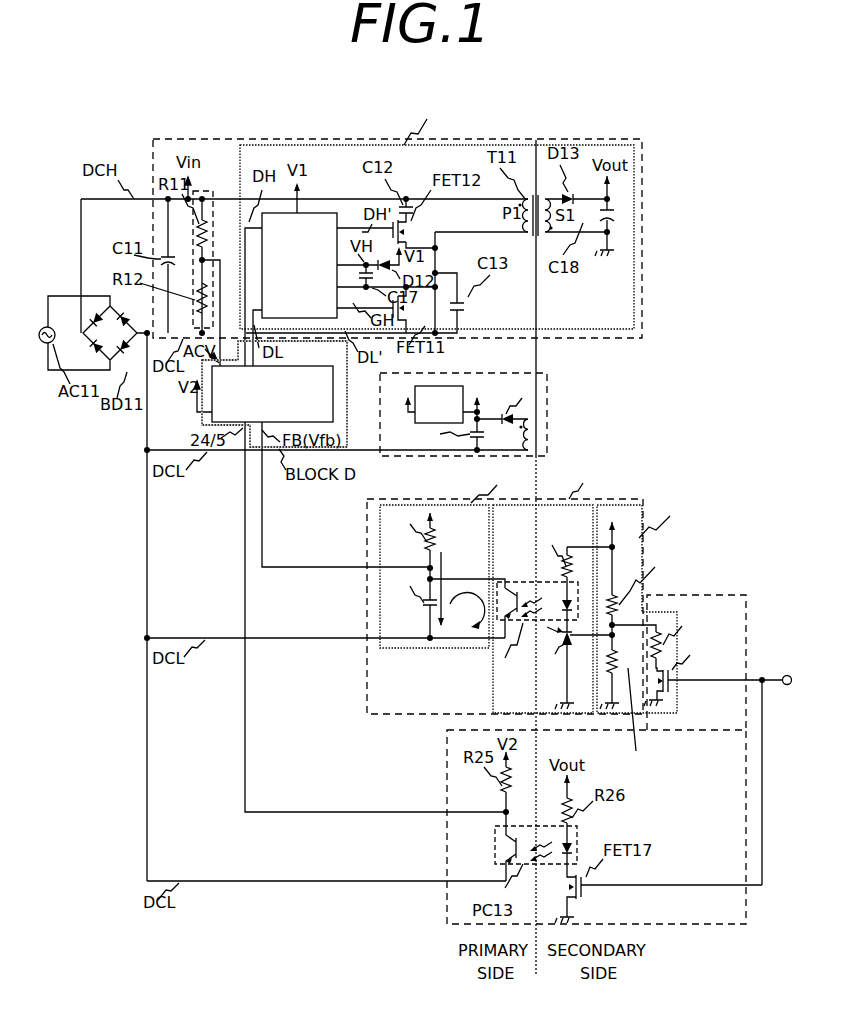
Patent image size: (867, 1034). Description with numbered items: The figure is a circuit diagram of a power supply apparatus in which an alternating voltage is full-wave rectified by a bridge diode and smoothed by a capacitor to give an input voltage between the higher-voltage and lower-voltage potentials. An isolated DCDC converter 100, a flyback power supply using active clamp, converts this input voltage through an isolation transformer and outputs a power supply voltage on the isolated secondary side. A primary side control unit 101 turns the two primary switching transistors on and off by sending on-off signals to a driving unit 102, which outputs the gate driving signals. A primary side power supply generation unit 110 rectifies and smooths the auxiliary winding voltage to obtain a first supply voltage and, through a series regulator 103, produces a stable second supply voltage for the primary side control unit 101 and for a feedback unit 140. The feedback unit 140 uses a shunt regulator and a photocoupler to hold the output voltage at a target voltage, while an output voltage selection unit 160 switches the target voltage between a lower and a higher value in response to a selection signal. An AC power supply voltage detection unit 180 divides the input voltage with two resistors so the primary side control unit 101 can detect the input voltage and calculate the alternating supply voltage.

The isolated DCDC converter 100 is at (643, 162).
The primary side control unit 101 is at (295, 365).
The driving unit 102 is at (313, 212).
The series regulator 103 is at (458, 386).
The primary side power supply generation unit 110 is at (493, 405).
The feedback unit 140 is at (364, 683).
The output voltage selection unit 160 is at (716, 594).
The AC power supply voltage detection unit 180 is at (225, 180).